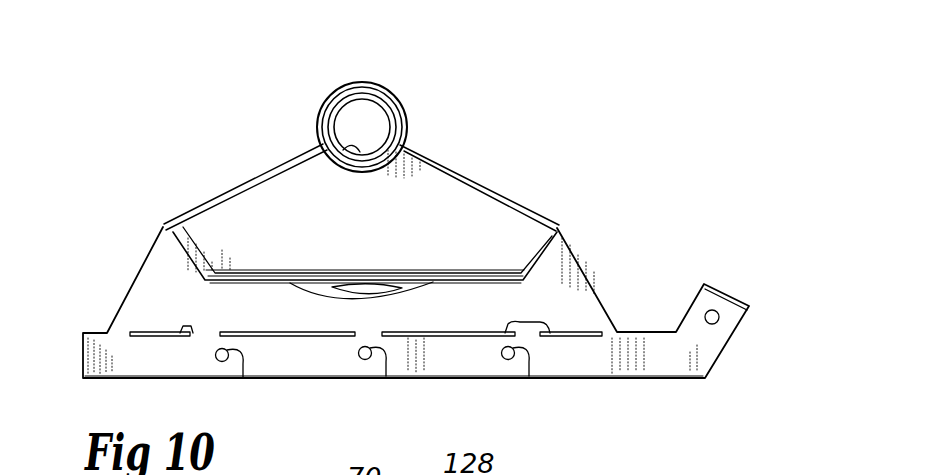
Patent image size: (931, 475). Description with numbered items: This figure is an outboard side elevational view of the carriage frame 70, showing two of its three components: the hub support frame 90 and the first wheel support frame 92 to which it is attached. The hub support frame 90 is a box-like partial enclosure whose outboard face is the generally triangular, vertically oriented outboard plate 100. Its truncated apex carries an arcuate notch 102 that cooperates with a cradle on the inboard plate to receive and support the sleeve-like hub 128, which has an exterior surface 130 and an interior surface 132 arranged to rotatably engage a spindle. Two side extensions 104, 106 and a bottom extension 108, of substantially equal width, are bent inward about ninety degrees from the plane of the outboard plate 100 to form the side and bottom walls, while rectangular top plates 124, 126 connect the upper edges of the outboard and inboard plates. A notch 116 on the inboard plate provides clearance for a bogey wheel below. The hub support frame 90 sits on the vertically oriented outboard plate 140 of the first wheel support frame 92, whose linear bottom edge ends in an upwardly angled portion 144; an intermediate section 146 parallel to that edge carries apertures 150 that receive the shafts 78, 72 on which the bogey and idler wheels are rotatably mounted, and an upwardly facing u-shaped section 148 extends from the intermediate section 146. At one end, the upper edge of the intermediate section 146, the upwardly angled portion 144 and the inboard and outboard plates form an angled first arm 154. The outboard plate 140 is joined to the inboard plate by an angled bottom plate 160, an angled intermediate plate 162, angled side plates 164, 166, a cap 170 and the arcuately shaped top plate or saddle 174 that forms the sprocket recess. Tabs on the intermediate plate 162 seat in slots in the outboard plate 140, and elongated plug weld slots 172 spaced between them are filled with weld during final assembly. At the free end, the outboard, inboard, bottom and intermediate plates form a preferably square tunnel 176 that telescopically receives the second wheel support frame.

The carriage frame 70 is at (306, 62).
The shaft 72 is at (719, 322).
The shaft 78 is at (244, 384).
The hub support frame 90 is at (436, 130).
The first wheel support frame 92 is at (670, 379).
The outboard plate 100 is at (425, 231).
The notch 102 is at (358, 148).
The side extension 104 is at (580, 254).
The side extension 106 is at (177, 246).
The bottom extension 108 is at (472, 284).
The notch 116 is at (352, 310).
The top plate 124 is at (452, 160).
The top plate 126 is at (280, 160).
The hub 128 is at (344, 80).
The exterior surface 130 is at (385, 84).
The interior surface 132 is at (350, 118).
The outboard plate 140 is at (150, 311).
The upwardly angled portion 144 is at (750, 314).
The intermediate section 146 is at (448, 362).
The u-shaped section 148 is at (578, 260).
The aperture 150 is at (221, 363).
The first arm 154 is at (694, 303).
The bottom plate 160 is at (581, 380).
The intermediate plate 162 is at (656, 332).
The side plate 164 is at (594, 286).
The side plate 166 is at (137, 278).
The cap 170 is at (722, 288).
The plug weld slots 172 is at (228, 306).
The top plate 174 is at (325, 283).
The tunnel 176 is at (80, 378).